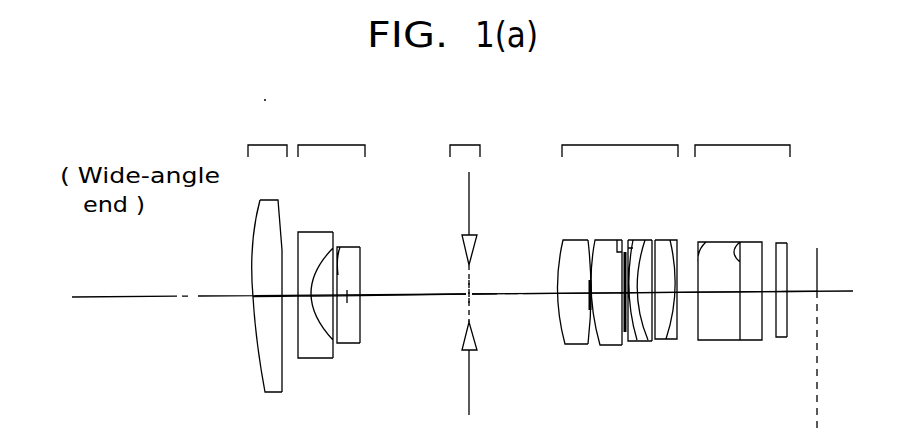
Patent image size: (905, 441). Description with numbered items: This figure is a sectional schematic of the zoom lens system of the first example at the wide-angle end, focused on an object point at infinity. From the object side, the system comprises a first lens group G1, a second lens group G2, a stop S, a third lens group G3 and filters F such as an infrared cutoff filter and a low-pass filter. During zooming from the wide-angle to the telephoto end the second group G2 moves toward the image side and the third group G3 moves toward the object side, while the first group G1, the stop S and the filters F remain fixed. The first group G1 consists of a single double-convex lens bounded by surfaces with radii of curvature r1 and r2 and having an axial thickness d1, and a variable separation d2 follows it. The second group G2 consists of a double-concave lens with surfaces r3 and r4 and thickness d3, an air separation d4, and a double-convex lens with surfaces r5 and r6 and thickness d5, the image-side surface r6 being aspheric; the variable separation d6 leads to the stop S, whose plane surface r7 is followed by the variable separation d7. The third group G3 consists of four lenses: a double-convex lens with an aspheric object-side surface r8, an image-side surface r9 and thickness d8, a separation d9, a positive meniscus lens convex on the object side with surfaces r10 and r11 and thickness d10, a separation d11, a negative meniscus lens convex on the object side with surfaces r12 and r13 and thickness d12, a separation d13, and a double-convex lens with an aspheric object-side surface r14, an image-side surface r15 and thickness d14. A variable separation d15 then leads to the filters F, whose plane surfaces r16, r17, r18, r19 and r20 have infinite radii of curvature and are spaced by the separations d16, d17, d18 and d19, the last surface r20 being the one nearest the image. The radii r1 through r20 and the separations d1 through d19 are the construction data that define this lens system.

The first lens group G1 is at (266, 135).
The second lens group G2 is at (331, 135).
The stop S is at (465, 263).
The third lens group G3 is at (620, 135).
The filters F is at (742, 133).
The radius of curvature of first lens surface r1 is at (257, 209).
The radius of curvature of second lens surface r2 is at (279, 209).
The radius of curvature of third lens surface r3 is at (297, 250).
The radius of curvature of fourth lens surface r4 is at (320, 257).
The radius of curvature of fifth lens surface r5 is at (341, 250).
The radius of curvature of sixth lens surface r6 is at (363, 257).
The radius of curvature of seventh surface (stop) r7 is at (466, 283).
The radius of curvature of eighth lens surface r8 is at (557, 265).
The radius of curvature of ninth lens surface r9 is at (562, 246).
The radius of curvature of tenth lens surface r10 is at (593, 262).
The radius of curvature of eleventh lens surface r11 is at (620, 250).
The radius of curvature of twelfth lens surface r12 is at (634, 255).
The radius of curvature of thirteenth lens surface r13 is at (646, 255).
The radius of curvature of fourteenth lens surface r14 is at (668, 258).
The radius of curvature of fifteenth lens surface r15 is at (698, 246).
The radius of curvature of sixteenth surface r16 is at (706, 244).
The radius of curvature of seventeenth surface r17 is at (740, 244).
The radius of curvature of eighteenth surface r18 is at (776, 248).
The radius of curvature of nineteenth surface r19 is at (787, 246).
The radius of curvature of twentieth surface r20 is at (817, 250).
The first surface separation d1 is at (262, 325).
The second surface separation d2 is at (288, 305).
The third surface separation d3 is at (315, 352).
The fourth surface separation d4 is at (326, 362).
The fifth surface separation d5 is at (358, 345).
The sixth surface separation d6 is at (410, 296).
The seventh surface separation d7 is at (520, 295).
The eighth surface separation d8 is at (566, 320).
The ninth surface separation d9 is at (590, 343).
The tenth surface separation d10 is at (606, 347).
The eleventh surface separation d11 is at (625, 333).
The twelfth surface separation d12 is at (641, 350).
The thirteenth surface separation d13 is at (665, 345).
The fourteenth surface separation d14 is at (672, 340).
The fifteenth surface separation d15 is at (693, 345).
The sixteenth surface separation d16 is at (722, 296).
The seventeenth surface separation d17 is at (750, 300).
The eighteenth surface separation d18 is at (769, 300).
The nineteenth surface separation d19 is at (790, 300).